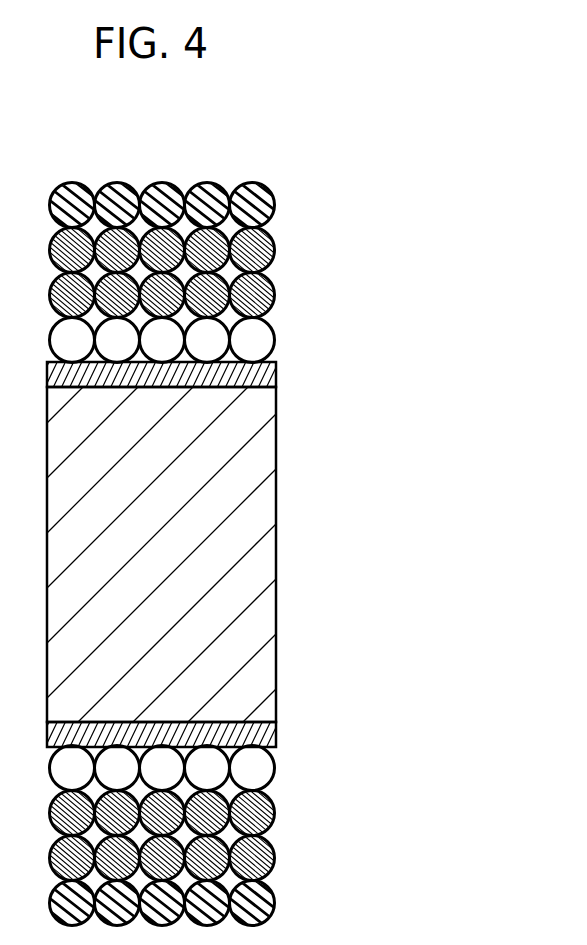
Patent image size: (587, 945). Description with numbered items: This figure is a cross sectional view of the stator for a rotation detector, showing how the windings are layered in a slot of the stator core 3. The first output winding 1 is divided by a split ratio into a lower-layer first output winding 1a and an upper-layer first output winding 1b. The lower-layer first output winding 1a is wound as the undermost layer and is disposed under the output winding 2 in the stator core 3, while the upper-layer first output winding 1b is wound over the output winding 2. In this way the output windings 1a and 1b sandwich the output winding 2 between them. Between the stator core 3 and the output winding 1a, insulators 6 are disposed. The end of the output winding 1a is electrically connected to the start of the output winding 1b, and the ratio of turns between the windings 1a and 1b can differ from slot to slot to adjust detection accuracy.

The output winding 1 is at (259, 267).
The lower-layer first output winding 1a is at (219, 335).
The upper-layer first output winding 1b is at (285, 205).
The output winding 2 is at (290, 230).
The stator core 3 is at (287, 557).
The insulator 6 is at (285, 373).